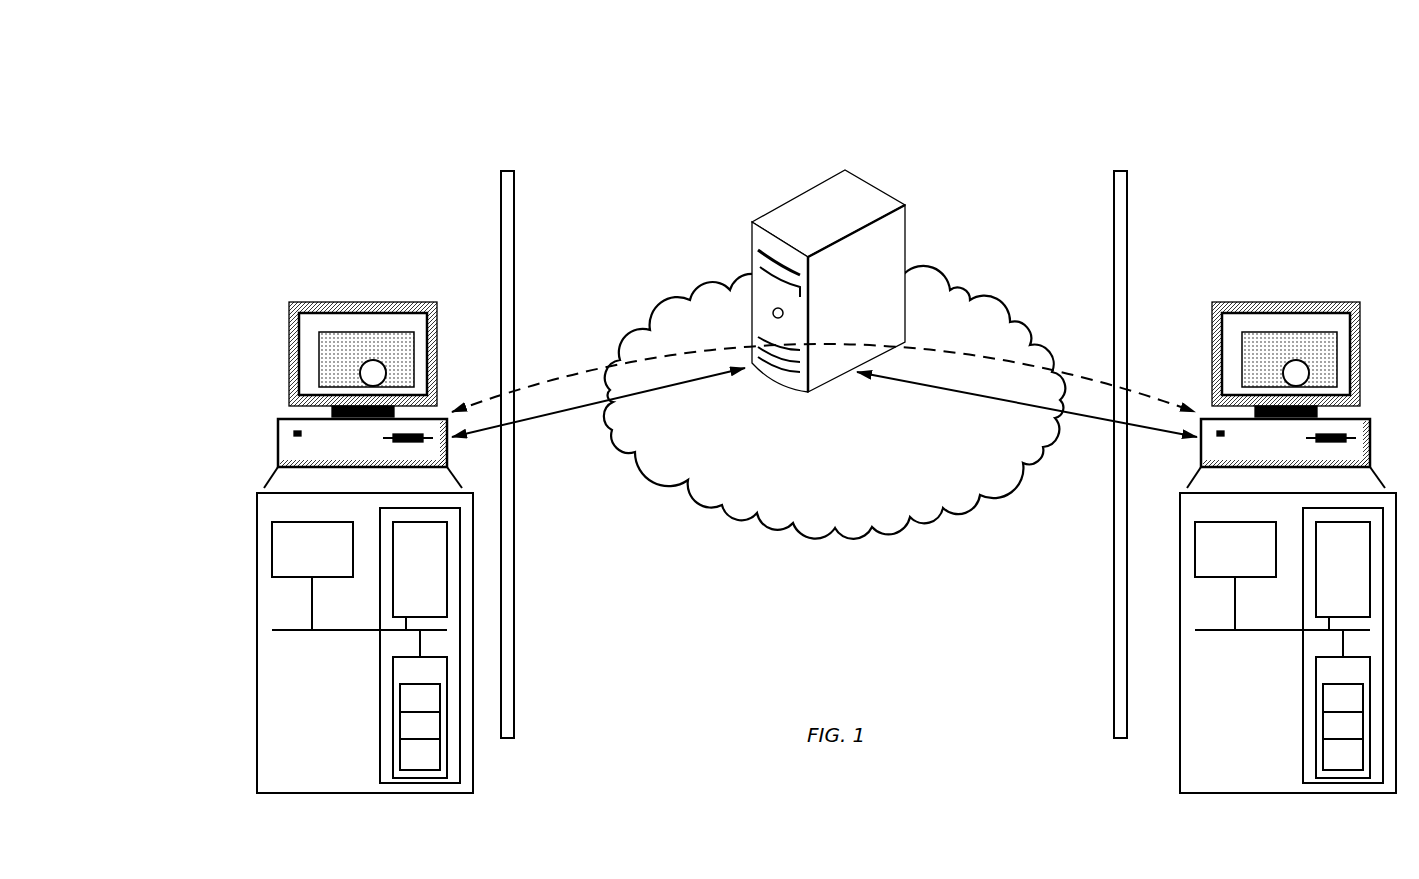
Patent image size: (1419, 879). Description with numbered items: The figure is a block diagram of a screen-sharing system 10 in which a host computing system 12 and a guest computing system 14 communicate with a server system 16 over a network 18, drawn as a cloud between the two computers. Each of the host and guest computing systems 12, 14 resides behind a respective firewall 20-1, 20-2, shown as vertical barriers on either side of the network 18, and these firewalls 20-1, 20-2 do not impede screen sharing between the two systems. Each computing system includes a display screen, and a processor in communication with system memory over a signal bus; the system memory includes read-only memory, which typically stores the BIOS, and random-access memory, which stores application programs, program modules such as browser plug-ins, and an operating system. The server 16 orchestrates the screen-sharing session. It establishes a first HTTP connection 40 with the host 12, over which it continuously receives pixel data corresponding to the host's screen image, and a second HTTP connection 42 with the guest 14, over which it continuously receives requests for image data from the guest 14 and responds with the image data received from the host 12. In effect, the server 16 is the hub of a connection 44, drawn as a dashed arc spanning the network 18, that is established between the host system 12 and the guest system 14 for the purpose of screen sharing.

The screen-sharing system 10 is at (459, 121).
The host computing system 12 is at (352, 517).
The guest computing system 14 is at (1285, 517).
The server system 16 is at (822, 272).
The network 18 is at (824, 438).
The firewall 20-1 is at (454, 454).
The firewall 20-2 is at (1171, 454).
The first HTTP connection 40 is at (598, 451).
The second HTTP connection 42 is at (1027, 460).
The connection 44 is at (823, 331).